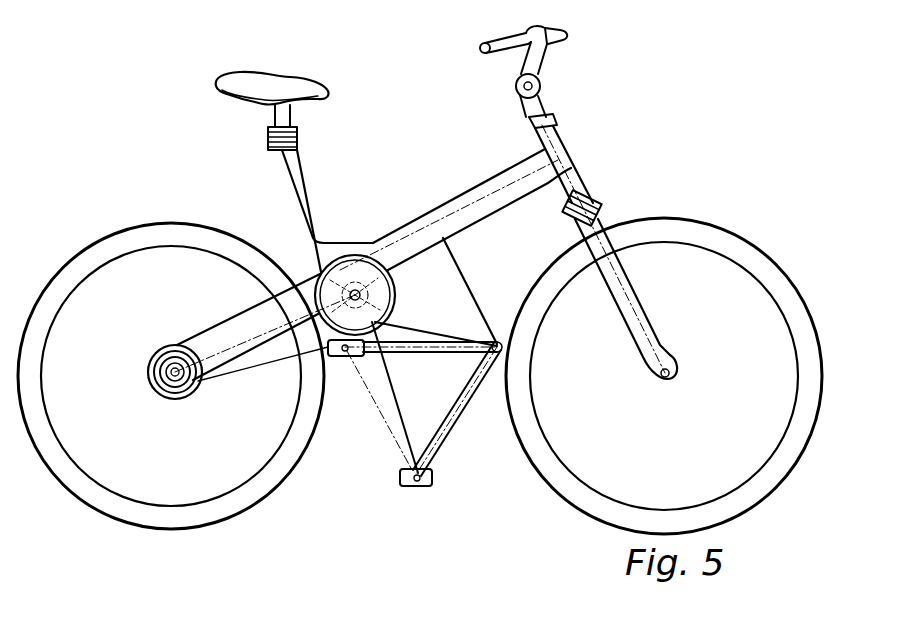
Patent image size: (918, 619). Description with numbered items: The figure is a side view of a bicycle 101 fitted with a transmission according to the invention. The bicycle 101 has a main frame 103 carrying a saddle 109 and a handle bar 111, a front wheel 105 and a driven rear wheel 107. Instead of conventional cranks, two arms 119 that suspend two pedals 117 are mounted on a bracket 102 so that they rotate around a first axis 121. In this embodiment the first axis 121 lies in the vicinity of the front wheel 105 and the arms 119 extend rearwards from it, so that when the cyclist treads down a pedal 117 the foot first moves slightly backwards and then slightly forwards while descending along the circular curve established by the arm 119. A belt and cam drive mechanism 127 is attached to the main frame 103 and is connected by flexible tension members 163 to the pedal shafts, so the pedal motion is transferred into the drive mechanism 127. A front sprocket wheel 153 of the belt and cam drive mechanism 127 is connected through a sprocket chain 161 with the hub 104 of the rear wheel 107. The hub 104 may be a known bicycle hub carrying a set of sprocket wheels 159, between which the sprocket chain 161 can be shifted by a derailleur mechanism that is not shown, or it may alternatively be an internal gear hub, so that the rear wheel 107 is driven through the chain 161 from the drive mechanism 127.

The bicycle 101 is at (622, 108).
The bracket 102 is at (477, 297).
The main frame 103 is at (457, 197).
The hub 104 is at (156, 358).
The front wheel 105 is at (700, 235).
The driven rear wheel 107 is at (113, 243).
The saddle 109 is at (268, 90).
The handle bar 111 is at (500, 48).
The pedal 117 is at (328, 356).
The arm 119 is at (420, 352).
The first axis 121 is at (482, 345).
The belt and cam drive mechanism 127 is at (355, 258).
The front sprocket wheel 153 is at (345, 268).
The sprocket wheels 159 is at (168, 398).
The sprocket chain 161 is at (218, 384).
The flexible tension members 163 is at (356, 358).